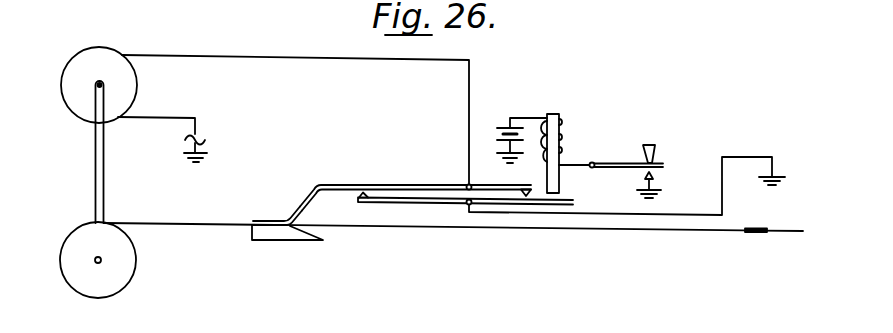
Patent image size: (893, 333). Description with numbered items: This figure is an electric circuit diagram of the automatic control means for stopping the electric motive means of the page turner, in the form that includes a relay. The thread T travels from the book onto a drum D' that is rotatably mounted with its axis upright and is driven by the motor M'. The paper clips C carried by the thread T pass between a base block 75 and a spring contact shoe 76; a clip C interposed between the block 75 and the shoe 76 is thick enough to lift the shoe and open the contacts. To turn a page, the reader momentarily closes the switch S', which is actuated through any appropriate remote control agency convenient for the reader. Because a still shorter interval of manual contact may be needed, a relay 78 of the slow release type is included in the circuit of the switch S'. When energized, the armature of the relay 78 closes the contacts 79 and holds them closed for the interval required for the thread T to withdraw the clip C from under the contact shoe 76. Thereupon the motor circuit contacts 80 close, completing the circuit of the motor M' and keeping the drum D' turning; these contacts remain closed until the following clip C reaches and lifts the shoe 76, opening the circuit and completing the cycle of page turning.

The motor M' is at (86, 120).
The drum D' is at (89, 277).
The thread T is at (152, 222).
The paper clip C is at (244, 223).
The base block 75 is at (263, 234).
The spring contact shoe 76 is at (278, 220).
The relay 78 is at (562, 145).
The contacts 79 is at (537, 197).
The motor circuit contacts 80 is at (373, 194).
The switch S' is at (633, 161).